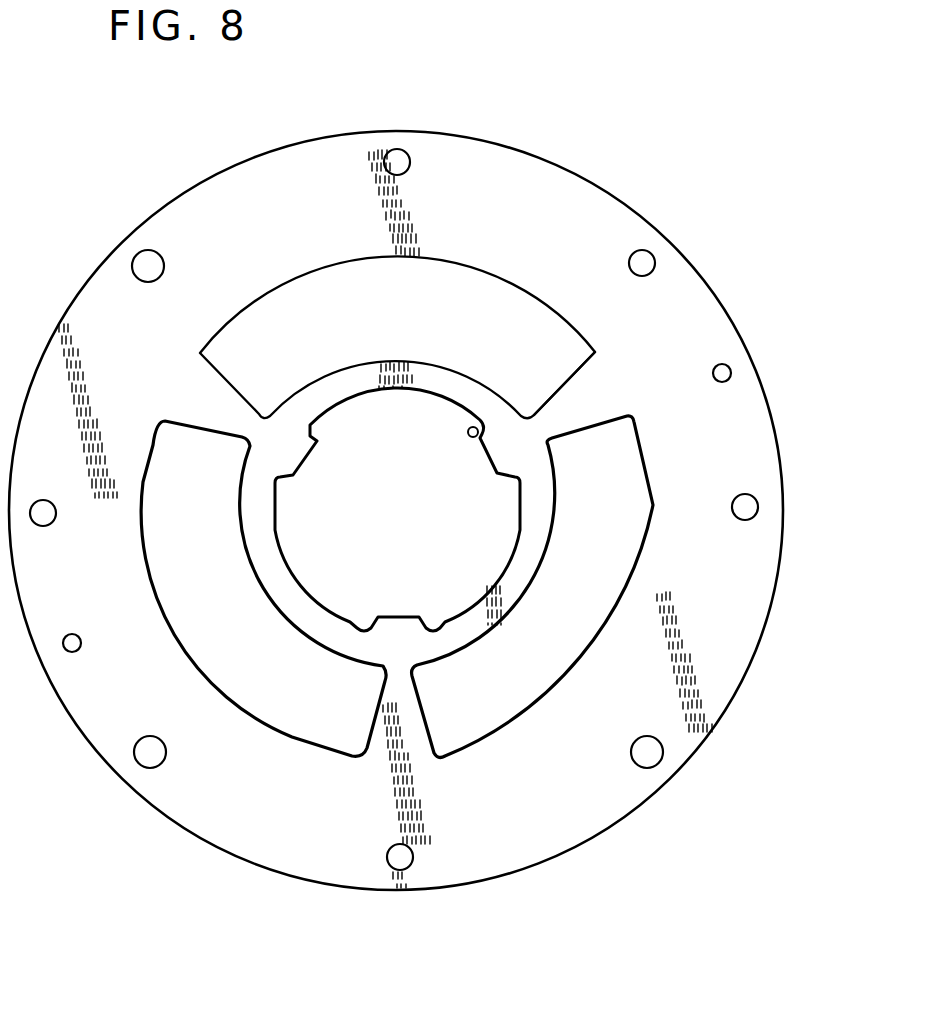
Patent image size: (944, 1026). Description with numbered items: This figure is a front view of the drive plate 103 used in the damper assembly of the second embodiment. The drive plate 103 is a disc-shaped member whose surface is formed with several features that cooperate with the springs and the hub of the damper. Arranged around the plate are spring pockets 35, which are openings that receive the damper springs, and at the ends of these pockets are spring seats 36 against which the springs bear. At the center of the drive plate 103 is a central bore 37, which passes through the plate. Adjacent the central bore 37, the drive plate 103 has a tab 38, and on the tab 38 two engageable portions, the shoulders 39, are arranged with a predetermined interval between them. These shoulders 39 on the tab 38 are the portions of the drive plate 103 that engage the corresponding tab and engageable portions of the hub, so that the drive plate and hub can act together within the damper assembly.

The drive plate 103 is at (742, 281).
The spring pocket 35 is at (453, 287).
The spring seat 36 is at (572, 378).
The central bore 37 is at (448, 563).
The tab 38 is at (493, 455).
The shoulder 39 is at (482, 436).